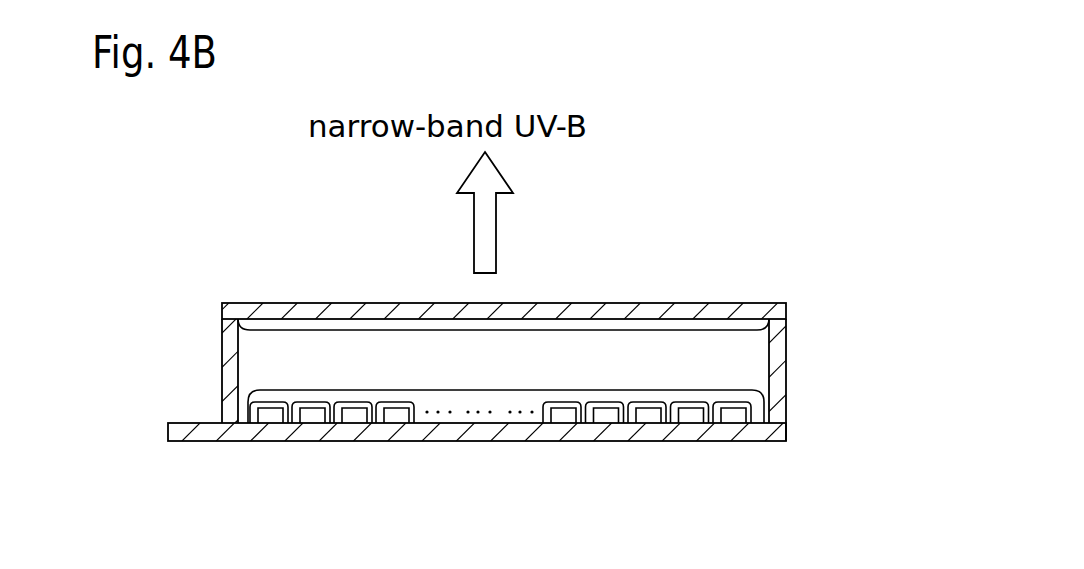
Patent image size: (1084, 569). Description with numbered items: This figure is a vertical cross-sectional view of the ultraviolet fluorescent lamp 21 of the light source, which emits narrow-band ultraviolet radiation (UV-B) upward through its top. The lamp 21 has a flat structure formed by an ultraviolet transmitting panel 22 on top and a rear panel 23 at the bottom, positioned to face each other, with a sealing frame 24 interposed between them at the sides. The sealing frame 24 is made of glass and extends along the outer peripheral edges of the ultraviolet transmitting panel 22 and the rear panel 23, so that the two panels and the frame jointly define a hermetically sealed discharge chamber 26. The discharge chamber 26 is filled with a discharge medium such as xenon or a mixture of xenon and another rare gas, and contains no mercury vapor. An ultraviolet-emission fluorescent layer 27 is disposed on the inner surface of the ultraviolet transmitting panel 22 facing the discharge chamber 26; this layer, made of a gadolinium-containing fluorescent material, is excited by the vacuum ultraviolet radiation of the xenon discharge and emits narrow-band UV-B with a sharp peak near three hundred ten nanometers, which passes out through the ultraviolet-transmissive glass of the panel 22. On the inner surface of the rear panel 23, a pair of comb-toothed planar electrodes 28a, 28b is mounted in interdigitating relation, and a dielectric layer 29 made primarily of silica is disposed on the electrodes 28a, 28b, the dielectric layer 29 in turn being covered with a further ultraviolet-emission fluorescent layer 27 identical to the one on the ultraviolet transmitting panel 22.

The ultraviolet fluorescent lamp 21 is at (808, 312).
The ultraviolet transmitting panel 22 is at (347, 305).
The rear panel 23 is at (200, 432).
The sealing frame 24 is at (230, 357).
The discharge chamber 26 is at (555, 347).
The ultraviolet-emission fluorescent layer 27 is at (696, 326).
The electrode 28a is at (687, 417).
The electrode 28b is at (735, 417).
The dielectric layer 29 is at (273, 410).